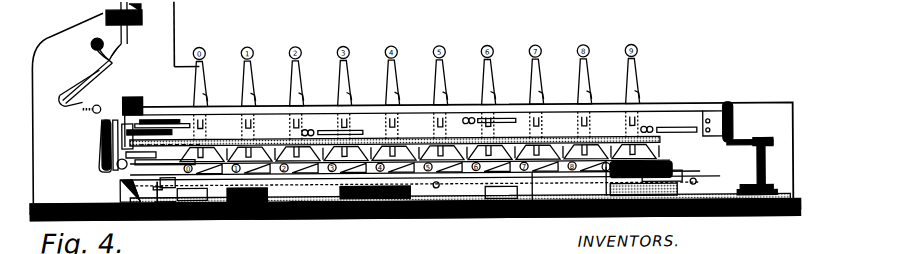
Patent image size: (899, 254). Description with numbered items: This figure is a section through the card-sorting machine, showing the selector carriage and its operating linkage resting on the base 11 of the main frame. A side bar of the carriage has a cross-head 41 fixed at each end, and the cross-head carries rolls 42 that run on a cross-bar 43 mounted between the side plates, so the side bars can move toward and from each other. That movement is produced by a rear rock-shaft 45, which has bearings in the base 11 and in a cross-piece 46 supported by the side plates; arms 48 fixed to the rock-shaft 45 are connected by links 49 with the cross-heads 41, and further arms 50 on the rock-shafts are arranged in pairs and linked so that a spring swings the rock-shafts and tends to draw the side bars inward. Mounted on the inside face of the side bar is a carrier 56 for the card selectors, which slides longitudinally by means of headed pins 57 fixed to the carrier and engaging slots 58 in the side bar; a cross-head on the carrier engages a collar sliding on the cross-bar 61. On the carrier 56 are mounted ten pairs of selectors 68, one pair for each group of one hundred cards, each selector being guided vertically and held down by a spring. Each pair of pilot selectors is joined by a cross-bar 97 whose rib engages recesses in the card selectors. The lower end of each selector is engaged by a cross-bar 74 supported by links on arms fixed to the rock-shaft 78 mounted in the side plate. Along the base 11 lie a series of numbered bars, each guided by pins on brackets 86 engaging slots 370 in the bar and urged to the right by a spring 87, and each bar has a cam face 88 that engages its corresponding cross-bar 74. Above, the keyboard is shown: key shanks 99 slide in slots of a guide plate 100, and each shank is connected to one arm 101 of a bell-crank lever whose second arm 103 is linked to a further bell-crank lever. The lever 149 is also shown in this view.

The guide plate 100 is at (107, 14).
The key shank 99 is at (141, 10).
The arm of bell-crank lever 101 is at (117, 40).
The second arm of bell-crank lever 103 is at (100, 56).
The cross-head 41 is at (113, 112).
The cross-bar 61 is at (133, 95).
The slot 58 is at (178, 110).
The headed pin 57 is at (150, 128).
The cross-bar 97 is at (207, 103).
The selector 68 is at (340, 94).
The side bar or carrier 56 is at (410, 104).
The cross-bar 43 is at (727, 105).
The roll 42 is at (733, 118).
The cross-piece 46 is at (763, 142).
The cam face 88 is at (205, 160).
The link 49 is at (728, 147).
The arm 48 is at (755, 148).
The rock-shaft 45 is at (765, 180).
The arm 50 is at (752, 190).
The lever 149 is at (117, 164).
The cam 370 is at (130, 180).
The bracket 86 is at (158, 207).
The cross-bar 74 is at (226, 207).
The spring 87 is at (296, 208).
The rock-shaft 78 is at (352, 208).
The base 11 is at (406, 212).